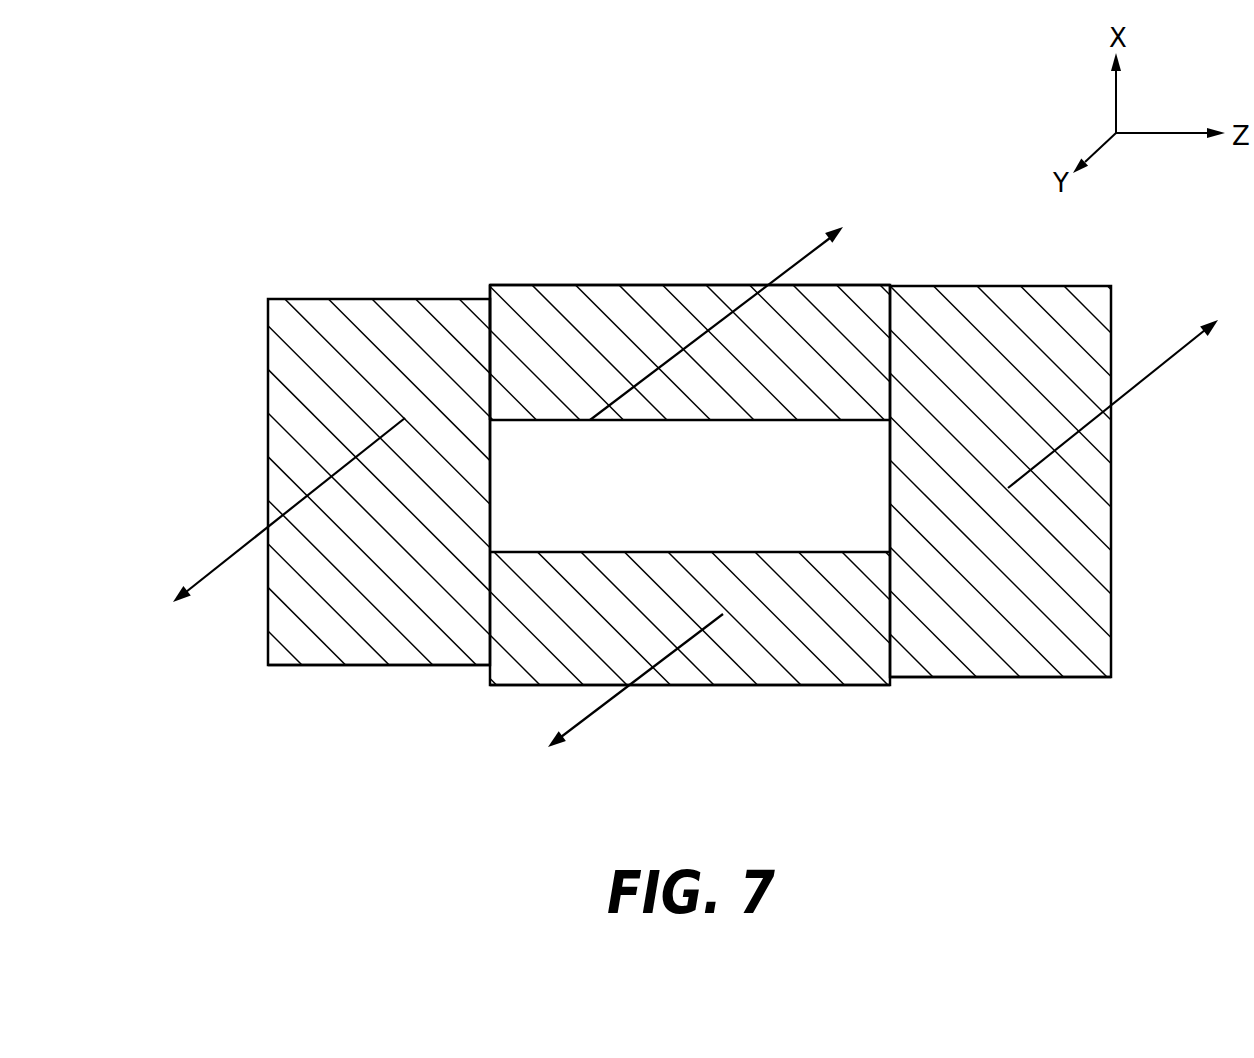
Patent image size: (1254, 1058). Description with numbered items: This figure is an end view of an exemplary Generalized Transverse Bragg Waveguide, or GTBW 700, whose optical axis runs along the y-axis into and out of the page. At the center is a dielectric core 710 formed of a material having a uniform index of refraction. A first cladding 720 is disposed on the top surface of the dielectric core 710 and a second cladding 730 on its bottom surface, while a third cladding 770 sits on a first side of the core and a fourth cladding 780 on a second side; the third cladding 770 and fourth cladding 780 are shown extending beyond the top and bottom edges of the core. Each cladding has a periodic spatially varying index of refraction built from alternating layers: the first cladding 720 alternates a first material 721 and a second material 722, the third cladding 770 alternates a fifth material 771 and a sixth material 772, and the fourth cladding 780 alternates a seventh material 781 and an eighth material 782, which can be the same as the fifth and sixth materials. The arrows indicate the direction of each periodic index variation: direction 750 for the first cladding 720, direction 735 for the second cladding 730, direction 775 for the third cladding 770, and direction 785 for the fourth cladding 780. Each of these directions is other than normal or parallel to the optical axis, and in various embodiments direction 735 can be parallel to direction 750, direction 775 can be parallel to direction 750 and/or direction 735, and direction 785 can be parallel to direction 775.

The GTBW 700 is at (759, 200).
The dielectric core 710 is at (875, 539).
The first cladding 720 is at (634, 280).
The first material 721 is at (508, 297).
The second material 722 is at (572, 297).
The second cladding 730 is at (825, 695).
The direction 735 is at (613, 704).
The direction 750 is at (835, 246).
The third cladding 770 is at (1120, 532).
The fifth material 771 is at (1037, 668).
The sixth material 772 is at (1070, 667).
The direction 775 is at (1177, 350).
The fourth cladding 780 is at (312, 294).
The seventh material 781 is at (358, 652).
The eighth material 782 is at (418, 652).
The direction 785 is at (215, 567).